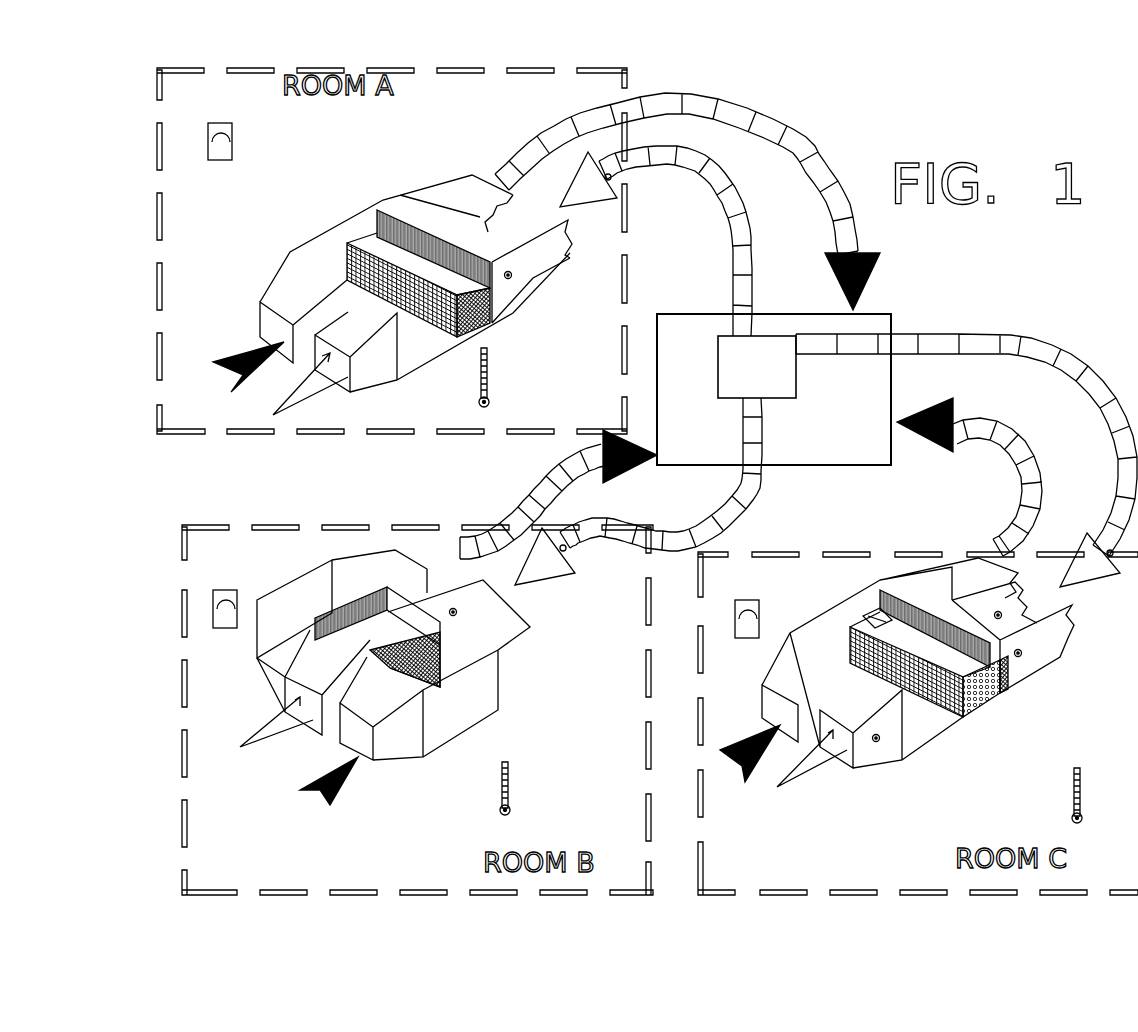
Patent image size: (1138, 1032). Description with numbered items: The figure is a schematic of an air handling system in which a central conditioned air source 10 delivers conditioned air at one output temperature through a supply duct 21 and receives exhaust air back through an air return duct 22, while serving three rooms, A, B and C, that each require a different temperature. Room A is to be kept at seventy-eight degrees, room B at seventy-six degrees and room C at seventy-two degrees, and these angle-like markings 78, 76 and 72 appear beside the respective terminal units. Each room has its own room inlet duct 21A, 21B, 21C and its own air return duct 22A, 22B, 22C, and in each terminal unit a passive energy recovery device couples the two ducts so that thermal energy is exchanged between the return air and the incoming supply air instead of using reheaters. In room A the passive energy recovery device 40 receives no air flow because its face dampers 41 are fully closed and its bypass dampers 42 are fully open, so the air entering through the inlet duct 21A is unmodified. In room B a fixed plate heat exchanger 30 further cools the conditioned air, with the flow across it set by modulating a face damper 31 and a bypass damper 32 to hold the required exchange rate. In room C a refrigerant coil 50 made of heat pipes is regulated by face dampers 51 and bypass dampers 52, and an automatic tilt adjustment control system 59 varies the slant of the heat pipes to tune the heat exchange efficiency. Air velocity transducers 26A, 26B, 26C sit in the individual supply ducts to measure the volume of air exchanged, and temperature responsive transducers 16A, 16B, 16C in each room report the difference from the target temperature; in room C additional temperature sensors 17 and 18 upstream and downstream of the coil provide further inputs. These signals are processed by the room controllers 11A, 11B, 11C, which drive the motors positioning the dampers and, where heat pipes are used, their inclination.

The central conditioned air source 10 is at (890, 318).
The supply duct 21 is at (771, 377).
The air return duct 22 is at (848, 418).
The room controller 11A is at (208, 126).
The room controller 11B is at (228, 592).
The room controller 11C is at (737, 606).
The temperature responsive transducer 16A is at (490, 383).
The temperature responsive transducer 16B is at (512, 796).
The temperature responsive transducer 16C is at (1072, 812).
The temperature sensor 17 is at (1022, 656).
The temperature sensor 18 is at (878, 742).
The room inlet duct 21A is at (623, 173).
The room inlet duct 21B is at (575, 553).
The room inlet duct 21C is at (872, 707).
The air return duct 22A is at (515, 152).
The air return duct 22B is at (518, 510).
The air return duct 22C is at (814, 685).
The transducer 26A is at (512, 277).
The transducer 26B is at (458, 614).
The transducer 26C is at (1002, 617).
The fixed plate heat exchanger 30 is at (365, 638).
The face damper 31 is at (470, 660).
The bypass damper 32 is at (335, 608).
The passive energy recovery device 40 is at (493, 320).
The face dampers 41 is at (493, 299).
The bypass dampers 42 is at (383, 213).
The refrigerant coil 50 is at (982, 720).
The face dampers 51 is at (1002, 694).
The bypass dampers 52 is at (888, 592).
The automatic tilt adjustment control system 59 is at (868, 615).
The duct angle 72 degrees 72 is at (812, 762).
The duct angle 76 degrees 76 is at (276, 735).
The duct angle 78 degrees 78 is at (696, 369).